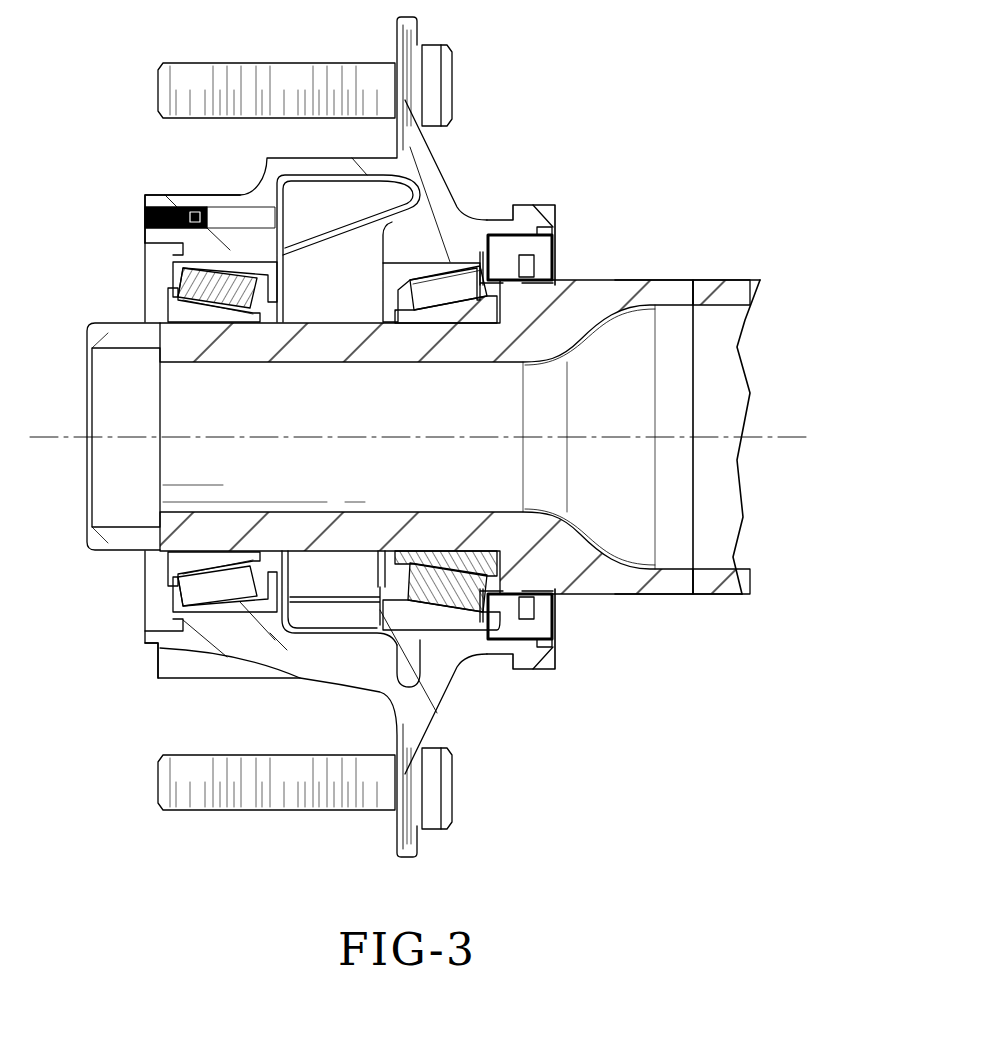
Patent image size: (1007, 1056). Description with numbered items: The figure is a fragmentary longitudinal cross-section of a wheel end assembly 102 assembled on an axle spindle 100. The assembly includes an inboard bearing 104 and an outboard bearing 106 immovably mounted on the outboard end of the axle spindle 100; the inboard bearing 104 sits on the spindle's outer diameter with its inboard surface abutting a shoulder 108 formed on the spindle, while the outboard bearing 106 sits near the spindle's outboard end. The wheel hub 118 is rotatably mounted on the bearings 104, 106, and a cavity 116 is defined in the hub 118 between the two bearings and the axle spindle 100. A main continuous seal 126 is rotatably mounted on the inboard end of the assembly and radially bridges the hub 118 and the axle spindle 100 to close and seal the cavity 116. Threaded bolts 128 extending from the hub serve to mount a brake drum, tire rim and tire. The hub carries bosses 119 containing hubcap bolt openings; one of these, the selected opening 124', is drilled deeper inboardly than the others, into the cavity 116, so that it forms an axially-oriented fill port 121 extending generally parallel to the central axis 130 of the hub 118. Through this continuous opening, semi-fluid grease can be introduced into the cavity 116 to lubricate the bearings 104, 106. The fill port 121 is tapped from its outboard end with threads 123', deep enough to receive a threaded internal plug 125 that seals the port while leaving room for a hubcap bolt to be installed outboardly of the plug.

The axle spindle 100 is at (85, 337).
The wheel end assembly 102 is at (455, 702).
The inboard bearing 104 is at (455, 313).
The outboard bearing 106 is at (212, 310).
The shoulder 108 is at (492, 303).
The cavity 116 is at (283, 200).
The wheel hub 118 is at (145, 648).
The bosses 119 is at (163, 200).
The fill port 121 is at (183, 272).
The threads 123' is at (125, 211).
The selected opening 124' is at (155, 231).
The threaded internal plug 125 is at (193, 212).
The main continuous seal 126 is at (557, 252).
The threaded bolts 128 is at (260, 810).
The central axis 130 is at (753, 437).